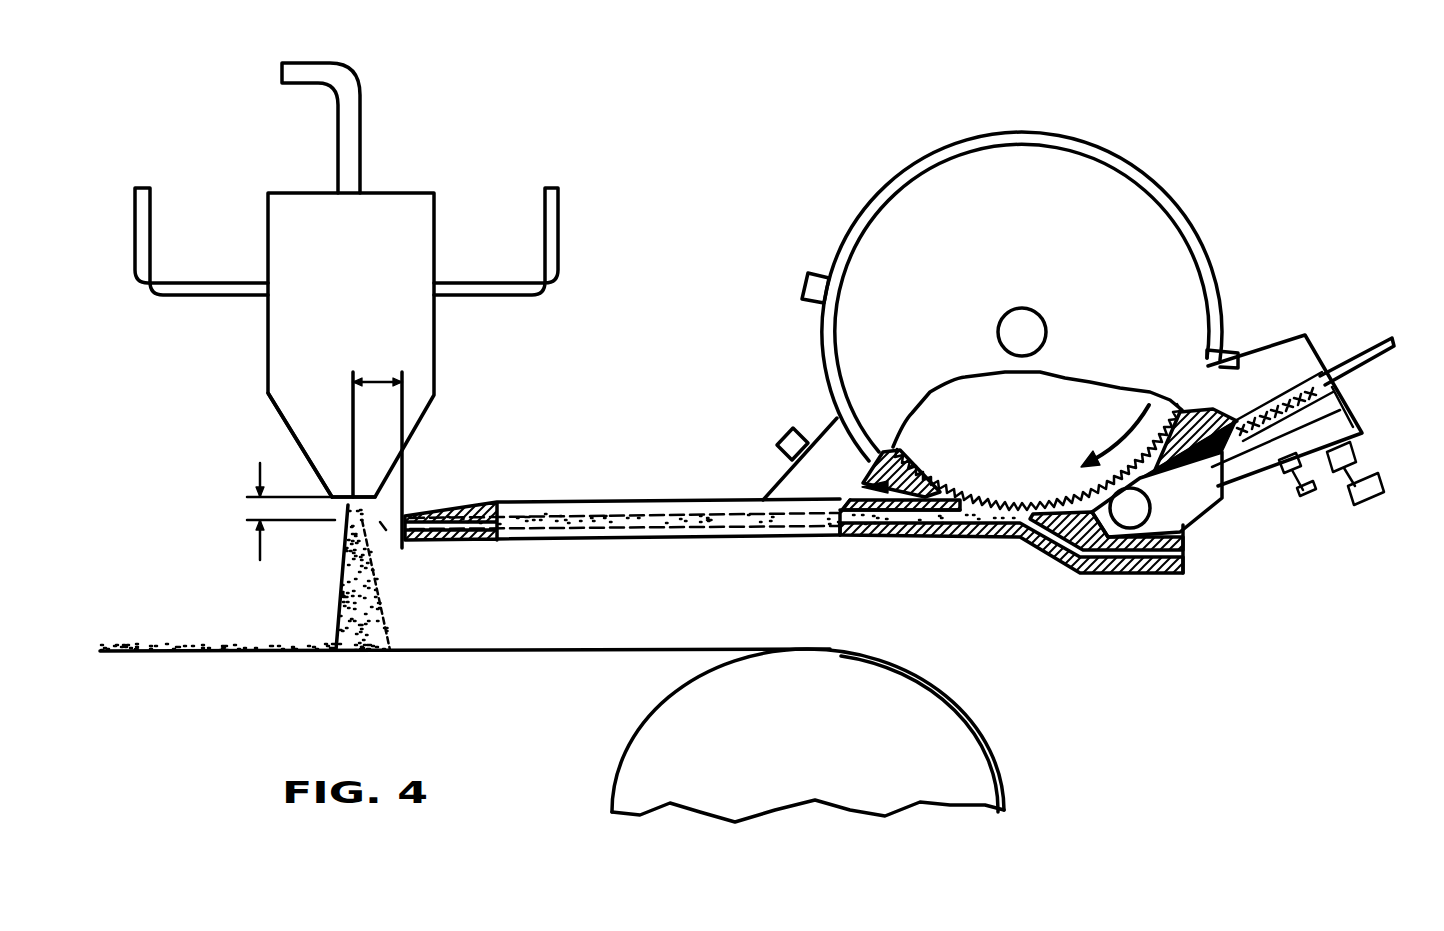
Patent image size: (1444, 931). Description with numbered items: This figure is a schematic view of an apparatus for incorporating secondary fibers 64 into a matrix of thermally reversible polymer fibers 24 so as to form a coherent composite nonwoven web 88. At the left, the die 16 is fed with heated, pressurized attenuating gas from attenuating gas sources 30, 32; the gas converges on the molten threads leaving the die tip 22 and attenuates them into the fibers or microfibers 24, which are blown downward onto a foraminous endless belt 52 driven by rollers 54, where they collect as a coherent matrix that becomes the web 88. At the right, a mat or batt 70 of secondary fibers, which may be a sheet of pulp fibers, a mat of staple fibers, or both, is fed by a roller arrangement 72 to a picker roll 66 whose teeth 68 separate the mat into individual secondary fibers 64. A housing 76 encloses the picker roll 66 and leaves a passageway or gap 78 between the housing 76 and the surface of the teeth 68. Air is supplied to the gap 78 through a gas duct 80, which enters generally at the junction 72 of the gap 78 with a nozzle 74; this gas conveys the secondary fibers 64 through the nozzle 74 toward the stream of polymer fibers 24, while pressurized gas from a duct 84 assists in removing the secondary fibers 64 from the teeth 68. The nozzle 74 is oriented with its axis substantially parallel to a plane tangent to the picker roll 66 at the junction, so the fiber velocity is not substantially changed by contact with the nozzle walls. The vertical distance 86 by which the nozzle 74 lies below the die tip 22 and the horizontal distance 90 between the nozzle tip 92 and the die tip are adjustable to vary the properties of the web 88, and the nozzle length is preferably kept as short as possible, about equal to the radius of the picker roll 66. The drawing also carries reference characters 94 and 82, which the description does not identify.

The die 16 is at (378, 206).
The attenuating gas source 30 is at (142, 184).
The attenuating gas source 32 is at (548, 185).
The horizontal distance 90 is at (378, 370).
The die tip 22 is at (314, 480).
The vertical distance 86 is at (262, 510).
The thermally reversible polymer fibers 24 is at (342, 514).
The composite web 88 is at (155, 650).
The falling powder stream 94 is at (338, 598).
The nozzle tip 92 is at (402, 548).
The secondary fibers 64 is at (384, 531).
The nozzle 74 is at (643, 541).
The foraminous endless belt 52 is at (510, 655).
The rollers 54 is at (937, 724).
The housing 76 is at (1038, 133).
The duct 84 is at (790, 430).
The teeth 68 is at (862, 477).
The picker roll 66 is at (1029, 461).
The passageway or gap 78 is at (933, 503).
The lower plate 82 is at (1017, 527).
The roller arrangement 72 is at (1148, 505).
The gas duct 80 is at (1187, 552).
The mat or batt of secondary fibers 70 is at (1357, 347).